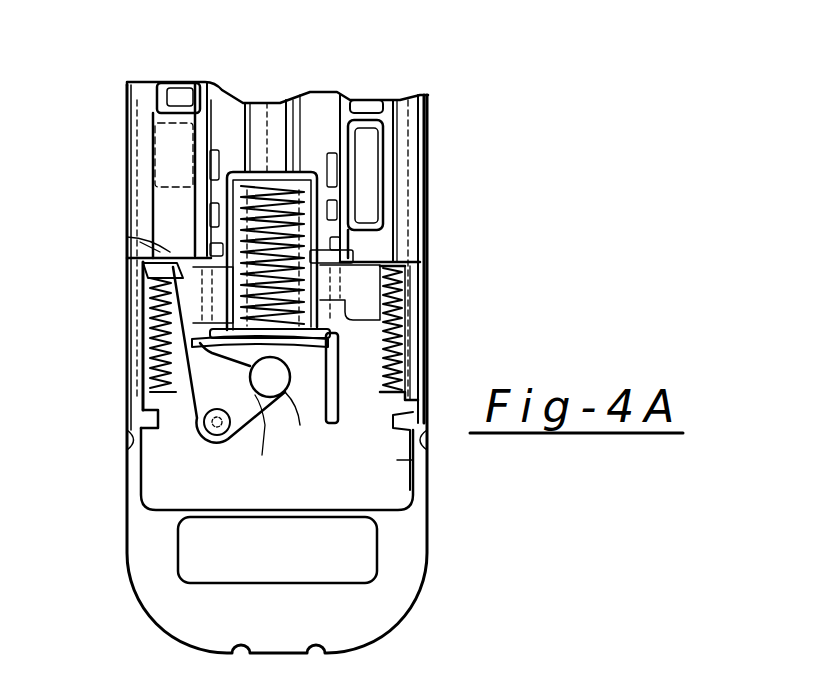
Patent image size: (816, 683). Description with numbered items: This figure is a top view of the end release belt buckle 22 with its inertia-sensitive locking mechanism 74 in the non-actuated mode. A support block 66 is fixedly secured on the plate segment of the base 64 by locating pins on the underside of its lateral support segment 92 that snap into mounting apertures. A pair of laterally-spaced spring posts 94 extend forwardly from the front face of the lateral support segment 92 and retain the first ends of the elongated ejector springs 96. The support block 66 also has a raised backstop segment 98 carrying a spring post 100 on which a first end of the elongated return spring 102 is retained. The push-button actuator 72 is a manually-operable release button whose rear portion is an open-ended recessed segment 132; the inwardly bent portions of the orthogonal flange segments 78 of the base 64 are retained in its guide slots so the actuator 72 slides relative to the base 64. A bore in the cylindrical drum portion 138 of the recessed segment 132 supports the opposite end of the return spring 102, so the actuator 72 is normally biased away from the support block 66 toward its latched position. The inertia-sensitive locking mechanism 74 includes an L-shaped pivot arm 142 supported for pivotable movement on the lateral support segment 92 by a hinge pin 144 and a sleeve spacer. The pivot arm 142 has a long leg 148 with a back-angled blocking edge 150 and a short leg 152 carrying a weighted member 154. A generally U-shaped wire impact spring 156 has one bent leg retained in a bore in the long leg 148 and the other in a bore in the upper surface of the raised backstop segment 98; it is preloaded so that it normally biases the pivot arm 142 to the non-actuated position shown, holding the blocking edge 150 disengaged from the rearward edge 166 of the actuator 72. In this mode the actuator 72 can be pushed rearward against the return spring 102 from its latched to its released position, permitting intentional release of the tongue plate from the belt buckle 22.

The belt buckle 22 is at (437, 163).
The base 64 is at (432, 588).
The support block 66 is at (427, 495).
The push-button actuator 72 is at (393, 157).
The inertia-sensitive locking mechanism 74 is at (270, 427).
The orthogonal flange segments 78 is at (405, 223).
The lateral support segment 92 is at (397, 460).
The spring posts 94 is at (395, 358).
The ejector springs 96 is at (385, 312).
The raised backstop segment 98 is at (423, 393).
The spring post 100 is at (385, 300).
The return spring 102 is at (405, 270).
The recessed segment 132 is at (300, 165).
The cylindrical drum portion 138 is at (260, 105).
The L-shaped pivot arm 142 is at (206, 389).
The hinge pin 144 is at (227, 440).
The long leg 148 is at (181, 318).
The blocking edge 150 is at (130, 277).
The short leg 152 is at (253, 423).
The weighted member 154 is at (297, 420).
The impact spring 156 is at (323, 377).
The rearward edge 166 is at (142, 242).